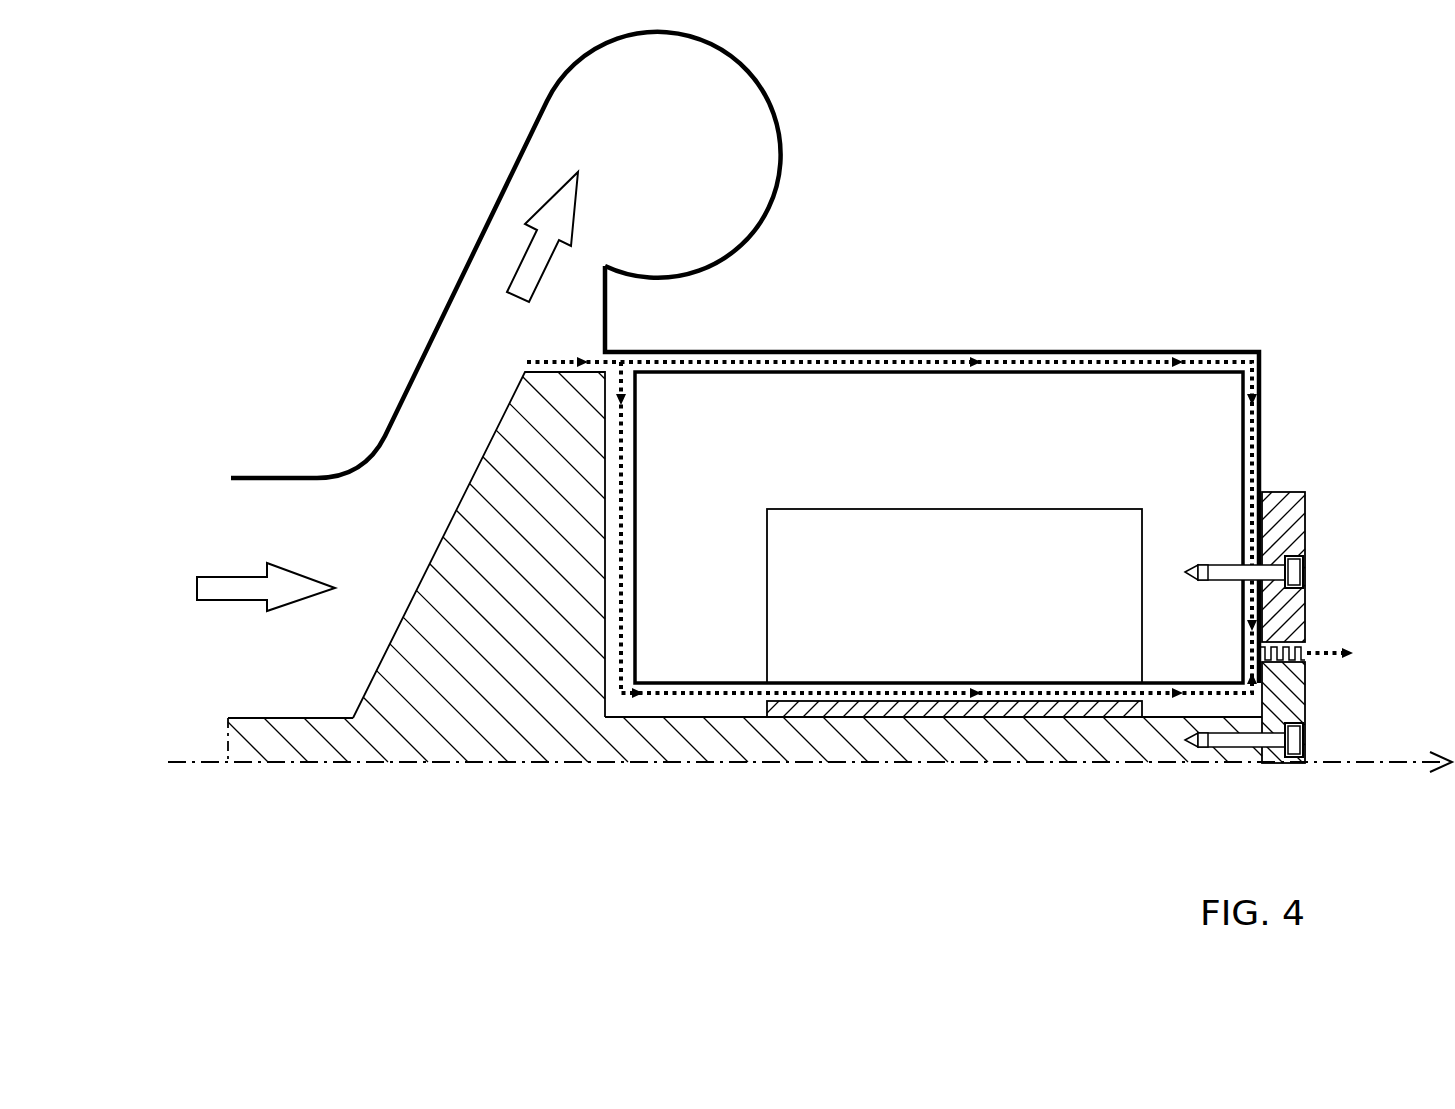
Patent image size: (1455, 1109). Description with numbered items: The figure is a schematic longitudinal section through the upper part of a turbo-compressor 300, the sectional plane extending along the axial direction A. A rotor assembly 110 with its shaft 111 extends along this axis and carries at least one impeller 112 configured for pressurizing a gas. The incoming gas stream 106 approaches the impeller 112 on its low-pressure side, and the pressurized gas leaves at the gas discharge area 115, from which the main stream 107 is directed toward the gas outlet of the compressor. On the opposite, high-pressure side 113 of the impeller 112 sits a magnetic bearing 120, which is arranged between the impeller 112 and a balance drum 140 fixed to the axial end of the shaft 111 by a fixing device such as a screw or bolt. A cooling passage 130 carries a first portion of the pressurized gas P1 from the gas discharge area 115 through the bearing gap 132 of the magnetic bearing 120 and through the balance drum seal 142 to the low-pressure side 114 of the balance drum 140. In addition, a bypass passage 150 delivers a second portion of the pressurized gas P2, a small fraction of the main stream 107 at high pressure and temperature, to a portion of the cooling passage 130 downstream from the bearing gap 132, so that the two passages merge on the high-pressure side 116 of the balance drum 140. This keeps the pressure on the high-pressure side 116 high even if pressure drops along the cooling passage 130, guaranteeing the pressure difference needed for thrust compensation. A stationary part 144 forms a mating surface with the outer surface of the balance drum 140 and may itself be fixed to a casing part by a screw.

The turbo-compressor 300 is at (225, 188).
The main stream of the pressurized gas 107 is at (550, 218).
The gas discharge area 115 is at (537, 260).
The incoming gas stream 106 is at (193, 588).
The rotor assembly 110 is at (222, 739).
The impeller 112 is at (488, 522).
The shaft 111 is at (883, 748).
The bypass passage 150 is at (1218, 352).
The cooling passage 130 is at (623, 520).
The high-pressure side 113 is at (682, 512).
The magnetic bearing 120 is at (1107, 533).
The bearing gap 132 is at (932, 693).
The second portion of the pressurized gas P2 is at (943, 360).
The first portion of the pressurized gas P1 is at (1057, 695).
The stationary part 144 is at (1292, 527).
The balance drum seal 142 is at (1293, 663).
The low-pressure side of the balance drum 114 is at (1328, 643).
The high-pressure side of the balance drum 116 is at (1266, 627).
The balance drum 140 is at (1318, 717).
The axial direction A is at (810, 742).